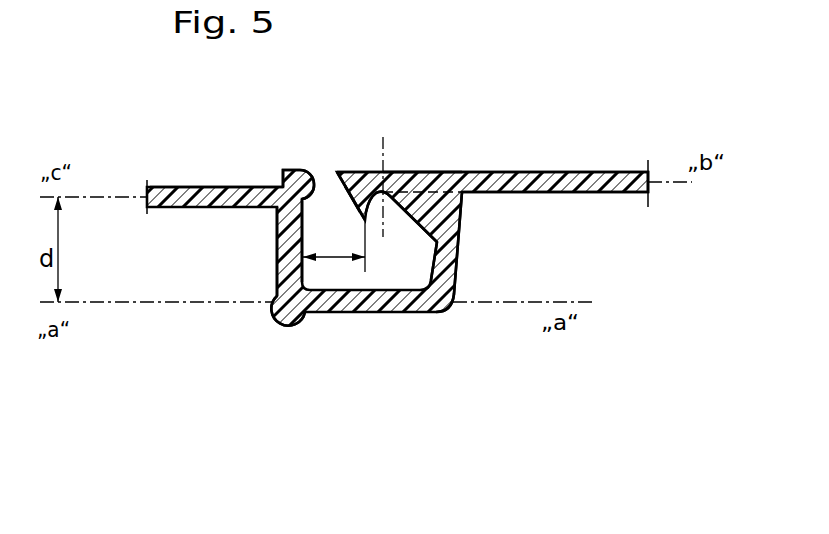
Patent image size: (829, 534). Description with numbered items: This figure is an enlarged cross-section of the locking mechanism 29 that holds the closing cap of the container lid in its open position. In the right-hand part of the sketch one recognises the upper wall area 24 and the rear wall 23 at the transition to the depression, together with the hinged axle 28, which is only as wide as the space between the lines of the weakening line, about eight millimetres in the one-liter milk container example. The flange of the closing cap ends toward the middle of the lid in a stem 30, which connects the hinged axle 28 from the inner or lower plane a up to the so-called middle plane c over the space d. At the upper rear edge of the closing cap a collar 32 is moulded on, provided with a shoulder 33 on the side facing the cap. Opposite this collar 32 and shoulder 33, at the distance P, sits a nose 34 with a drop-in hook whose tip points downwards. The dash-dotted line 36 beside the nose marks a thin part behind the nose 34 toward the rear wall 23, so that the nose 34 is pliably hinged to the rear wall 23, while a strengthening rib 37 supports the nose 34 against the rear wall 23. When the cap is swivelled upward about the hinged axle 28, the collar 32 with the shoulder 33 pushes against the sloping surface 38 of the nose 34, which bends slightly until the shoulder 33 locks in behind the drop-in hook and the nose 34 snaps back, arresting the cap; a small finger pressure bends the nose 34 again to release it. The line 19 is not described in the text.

The reference line of lip tip 19 is at (365, 272).
The rear wall 23 is at (445, 249).
The upper wall area 24 is at (592, 180).
The hinged axle 28 is at (292, 312).
The locking mechanism 29 is at (407, 160).
The stem 30 is at (287, 245).
The collar 32 is at (298, 172).
The shoulder 33 is at (282, 180).
The nose 34 is at (357, 178).
The dash-dotted line 36 is at (383, 137).
The strengthening rib 37 is at (425, 205).
The sloping surface 38 is at (337, 187).
The distance p P is at (342, 260).